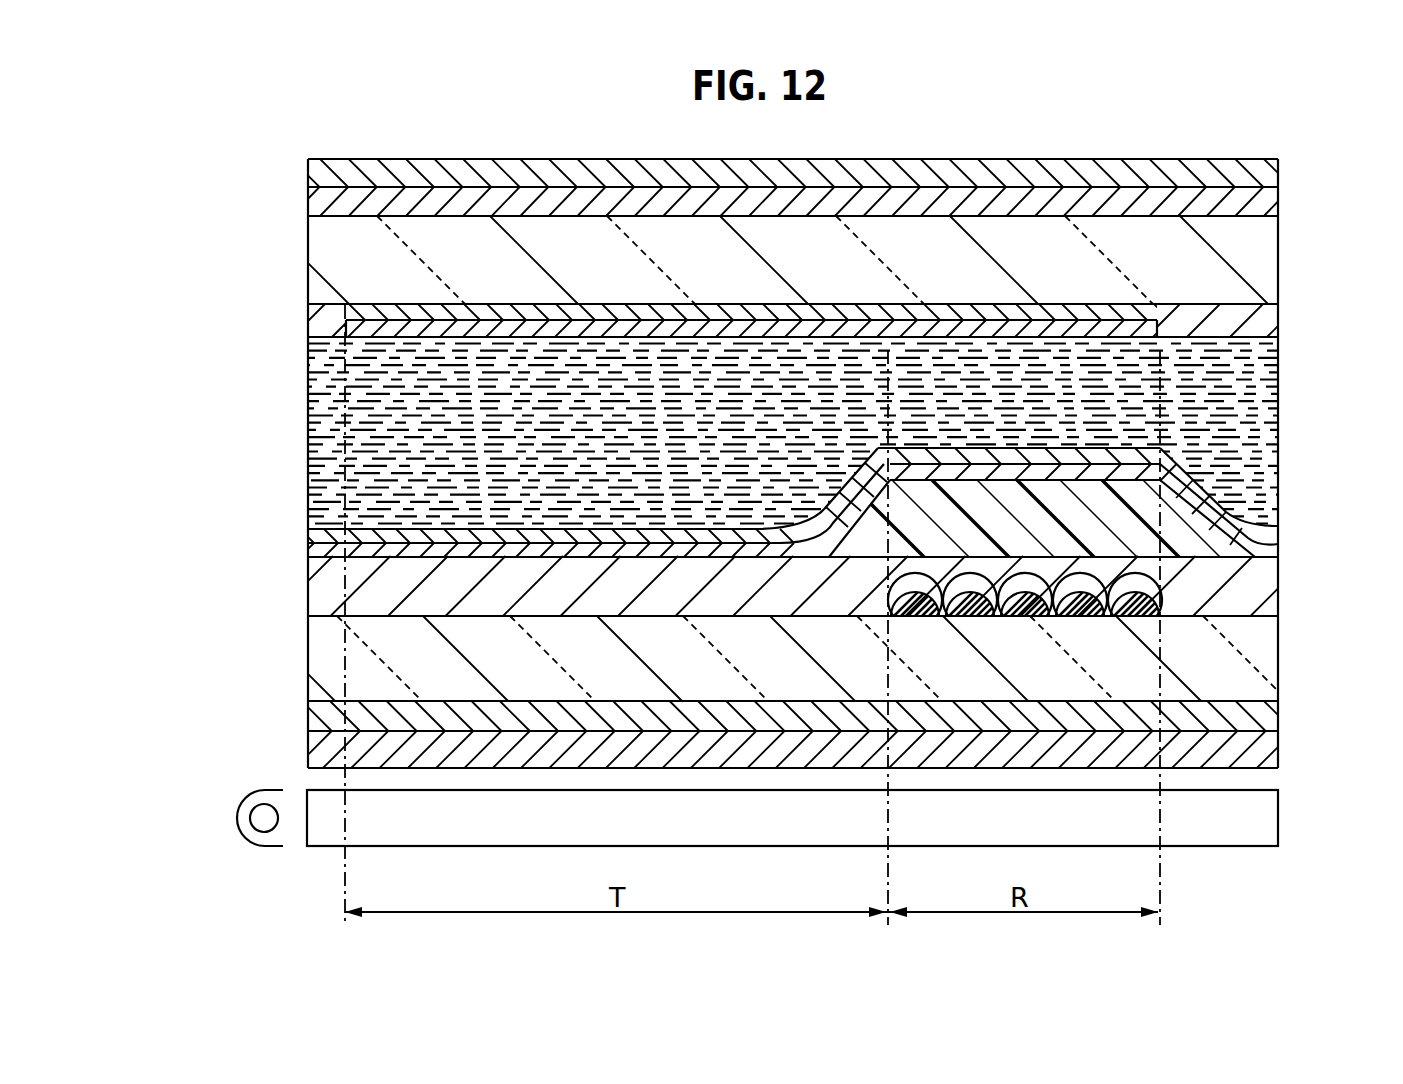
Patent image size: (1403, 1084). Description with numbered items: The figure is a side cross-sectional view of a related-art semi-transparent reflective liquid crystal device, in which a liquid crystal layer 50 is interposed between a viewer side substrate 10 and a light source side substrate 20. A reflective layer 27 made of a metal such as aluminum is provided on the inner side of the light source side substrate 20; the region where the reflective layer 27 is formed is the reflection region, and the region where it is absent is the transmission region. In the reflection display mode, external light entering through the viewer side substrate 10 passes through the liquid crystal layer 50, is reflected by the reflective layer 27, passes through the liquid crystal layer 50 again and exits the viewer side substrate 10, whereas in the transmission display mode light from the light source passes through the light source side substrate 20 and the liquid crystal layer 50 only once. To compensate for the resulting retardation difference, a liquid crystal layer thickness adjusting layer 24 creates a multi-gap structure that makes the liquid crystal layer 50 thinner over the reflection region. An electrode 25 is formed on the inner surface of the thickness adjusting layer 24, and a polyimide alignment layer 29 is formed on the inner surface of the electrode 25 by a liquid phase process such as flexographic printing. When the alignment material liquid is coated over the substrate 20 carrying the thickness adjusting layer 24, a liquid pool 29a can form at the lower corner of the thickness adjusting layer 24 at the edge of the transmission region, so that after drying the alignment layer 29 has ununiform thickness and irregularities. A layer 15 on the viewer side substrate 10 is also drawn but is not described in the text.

The viewer side substrate 10 is at (299, 337).
The common electrode 15 is at (486, 318).
The liquid crystal layer 50 is at (318, 428).
The electrode 25 is at (362, 545).
The liquid pool 29a is at (822, 480).
The liquid crystal layer thickness adjusting layer 24 is at (1190, 518).
The alignment layer 29 is at (1274, 537).
The reflective layer 27 is at (1158, 575).
The light source side substrate 20 is at (299, 769).